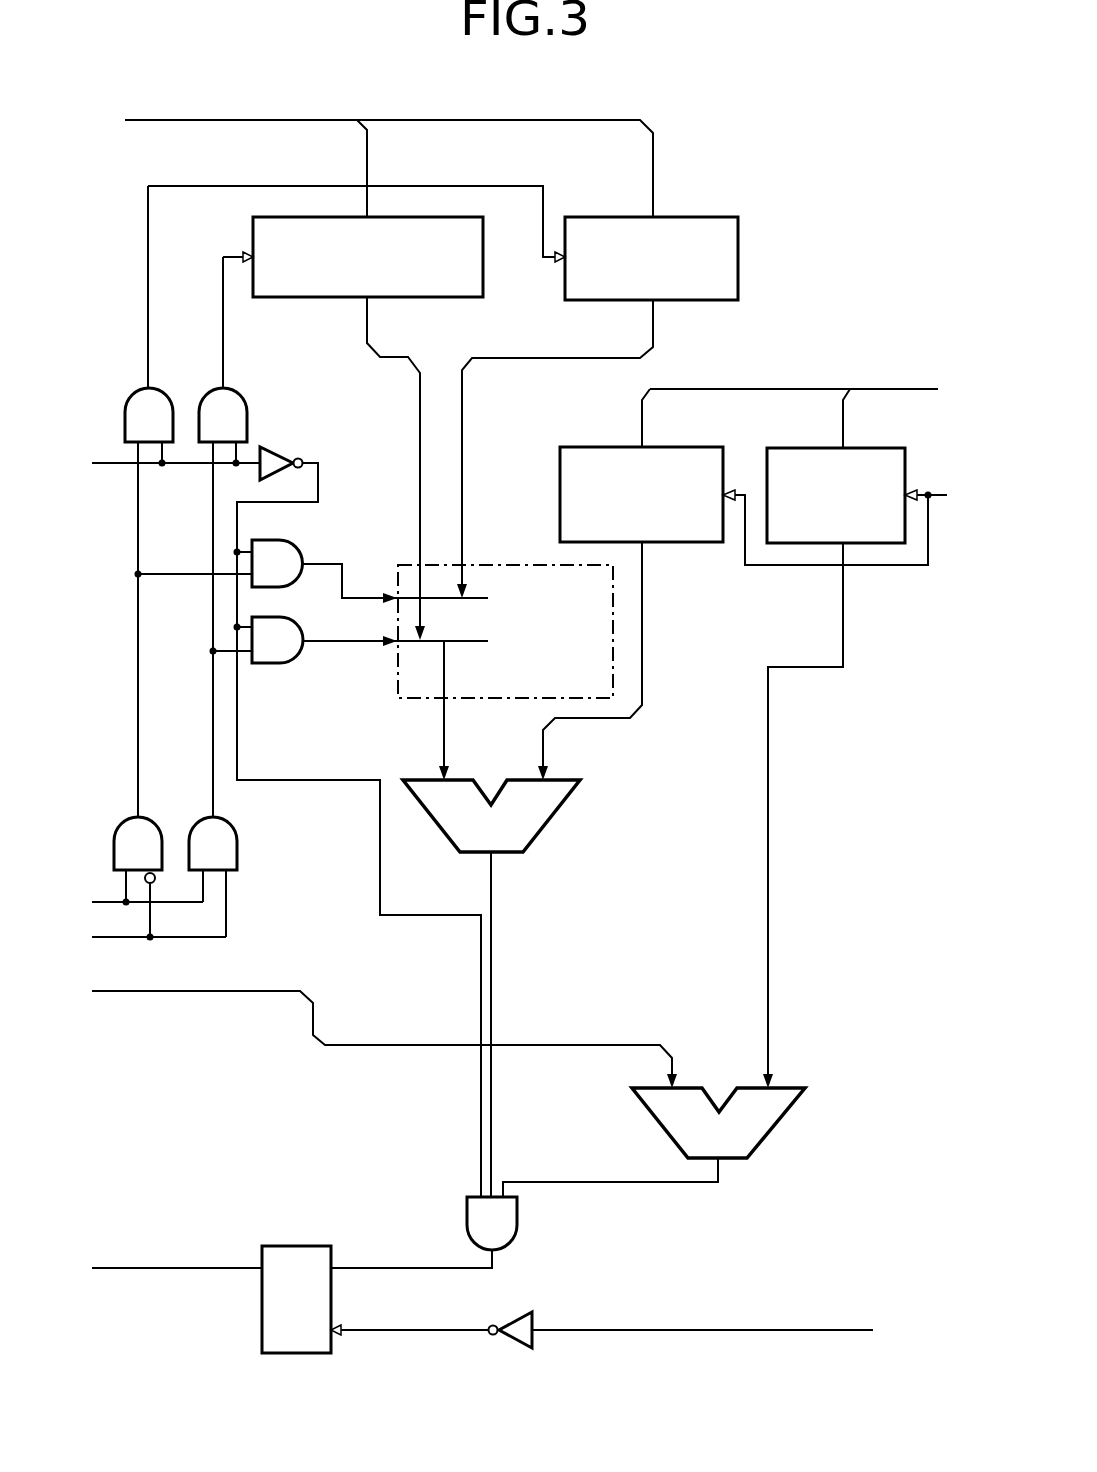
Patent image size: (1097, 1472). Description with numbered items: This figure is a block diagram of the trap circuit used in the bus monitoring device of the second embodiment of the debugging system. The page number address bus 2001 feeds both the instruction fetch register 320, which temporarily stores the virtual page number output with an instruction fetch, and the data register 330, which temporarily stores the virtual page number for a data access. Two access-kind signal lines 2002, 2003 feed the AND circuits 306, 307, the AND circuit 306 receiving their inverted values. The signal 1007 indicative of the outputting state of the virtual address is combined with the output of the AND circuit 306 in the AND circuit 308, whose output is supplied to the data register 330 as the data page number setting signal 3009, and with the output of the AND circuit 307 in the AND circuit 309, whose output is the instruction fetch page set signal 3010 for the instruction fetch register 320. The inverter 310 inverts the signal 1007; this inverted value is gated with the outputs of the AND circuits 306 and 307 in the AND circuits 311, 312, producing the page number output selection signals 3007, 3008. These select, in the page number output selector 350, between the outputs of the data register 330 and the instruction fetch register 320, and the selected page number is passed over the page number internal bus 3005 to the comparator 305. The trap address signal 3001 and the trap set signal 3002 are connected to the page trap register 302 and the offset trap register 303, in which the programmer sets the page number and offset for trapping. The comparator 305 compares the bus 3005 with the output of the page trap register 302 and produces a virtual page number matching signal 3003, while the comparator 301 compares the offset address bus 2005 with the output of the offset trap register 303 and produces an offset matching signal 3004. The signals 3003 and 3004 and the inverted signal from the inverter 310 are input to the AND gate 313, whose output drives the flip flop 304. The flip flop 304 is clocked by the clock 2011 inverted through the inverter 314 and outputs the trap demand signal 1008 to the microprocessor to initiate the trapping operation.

The page number address bus 2001 is at (270, 104).
The signal line 3009 is at (470, 186).
The instruction fetch page set signal 3010 is at (223, 333).
The instruction fetch register 320 is at (462, 297).
The data register 330 is at (738, 250).
The trap address signal 3001 is at (775, 389).
The page trap register 302 is at (693, 447).
The offset trap register 303 is at (868, 448).
The trap set signal 3002 is at (896, 565).
The page number output selector 350 is at (515, 565).
The AND circuit 308 is at (132, 393).
The AND circuit 309 is at (232, 393).
The inverter 310 is at (280, 447).
The signal indicative of the outputting state of the virtual address 1007 is at (108, 466).
The AND circuit 311 is at (268, 545).
The AND circuit 312 is at (272, 663).
The page number output selection signal 3007 is at (330, 563).
The page number output selection signal 3008 is at (350, 642).
The page number internal bus 3005 is at (444, 740).
The comparator 305 is at (547, 826).
The virtual page number matching signal 3003 is at (491, 935).
The AND circuit 306 is at (148, 817).
The AND circuit 307 is at (238, 845).
The signal line 2002 is at (108, 900).
The signal line 2003 is at (118, 940).
The offset address bus 2005 is at (122, 993).
The comparator 301 is at (775, 1136).
The offset matching signal 3004 is at (583, 1180).
The AND gate 313 is at (517, 1211).
The flip flop 304 is at (300, 1246).
The trap demand signal 1008 is at (158, 1268).
The inverter 314 is at (518, 1312).
The signal line 2011 is at (660, 1330).